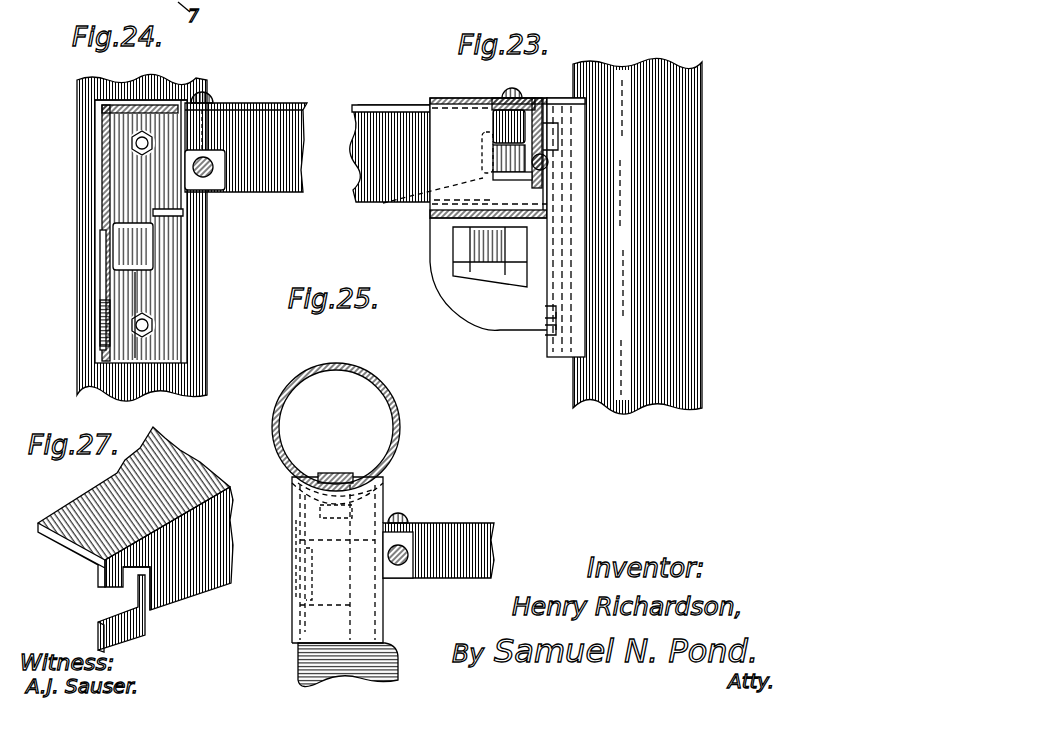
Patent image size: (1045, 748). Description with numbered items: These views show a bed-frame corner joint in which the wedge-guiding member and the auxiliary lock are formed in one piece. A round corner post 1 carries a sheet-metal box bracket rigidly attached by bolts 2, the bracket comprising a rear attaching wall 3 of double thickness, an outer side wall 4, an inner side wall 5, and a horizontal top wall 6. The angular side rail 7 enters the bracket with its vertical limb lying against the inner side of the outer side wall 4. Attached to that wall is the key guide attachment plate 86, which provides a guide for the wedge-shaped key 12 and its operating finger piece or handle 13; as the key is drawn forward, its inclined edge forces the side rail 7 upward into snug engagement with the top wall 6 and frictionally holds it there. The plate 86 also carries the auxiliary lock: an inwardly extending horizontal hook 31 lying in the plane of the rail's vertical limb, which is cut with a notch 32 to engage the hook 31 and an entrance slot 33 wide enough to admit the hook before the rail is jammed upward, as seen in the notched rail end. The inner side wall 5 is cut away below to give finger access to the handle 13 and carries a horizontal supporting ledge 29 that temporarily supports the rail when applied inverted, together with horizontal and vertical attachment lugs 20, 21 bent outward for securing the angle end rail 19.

In FIG. 24, the corner post 1 is at (140, 90).
In FIG. 23, the corner post 1 is at (660, 192).
In FIG. 25, the corner post 1 is at (392, 420).
In FIG. 24, the bolts 2 is at (142, 155).
In FIG. 23, the bolts 2 is at (554, 340).
In FIG. 25, the bolts 2 is at (318, 512).
In FIG. 24, the rear attaching wall 3 is at (153, 292).
In FIG. 24, the outer side wall 4 is at (100, 265).
In FIG. 25, the outer side wall 4 is at (292, 577).
In FIG. 24, the inner side wall 5 is at (183, 265).
In FIG. 25, the inner side wall 5 is at (386, 598).
In FIG. 24, the horizontal top wall 6 is at (117, 80).
In FIG. 23, the horizontal top wall 6 is at (455, 98).
In FIG. 25, the horizontal top wall 6 is at (325, 578).
In FIG. 24, the side rail 7 is at (103, 128).
In FIG. 23, the side rail 7 is at (392, 135).
In FIG. 25, the side rail 7 is at (325, 655).
In FIG. 27, the side rail 7 is at (205, 488).
In FIG. 23, the wedge-shaped key 12 is at (490, 250).
In FIG. 24, the finger piece or handle 13 is at (120, 227).
In FIG. 23, the finger piece or handle 13 is at (470, 238).
In FIG. 25, the finger piece or handle 13 is at (376, 504).
In FIG. 24, the angle end rail 19 is at (238, 130).
In FIG. 23, the angle end rail 19 is at (540, 98).
In FIG. 25, the angle end rail 19 is at (455, 548).
In FIG. 24, the horizontal attachment lug 20 is at (214, 101).
In FIG. 23, the horizontal attachment lug 20 is at (521, 90).
In FIG. 25, the horizontal attachment lug 20 is at (405, 570).
In FIG. 24, the vertical attachment lug 21 is at (220, 188).
In FIG. 23, the vertical attachment lug 21 is at (524, 182).
In FIG. 24, the horizontal supporting ledge 29 is at (160, 220).
In FIG. 23, the hook 31 is at (482, 162).
In FIG. 23, the notch 32 is at (414, 208).
In FIG. 27, the notch 32 is at (150, 590).
In FIG. 27, the entrance slot 33 is at (115, 600).
In FIG. 24, the key guide attachment plate 86 is at (100, 312).
In FIG. 23, the key guide attachment plate 86 is at (458, 305).